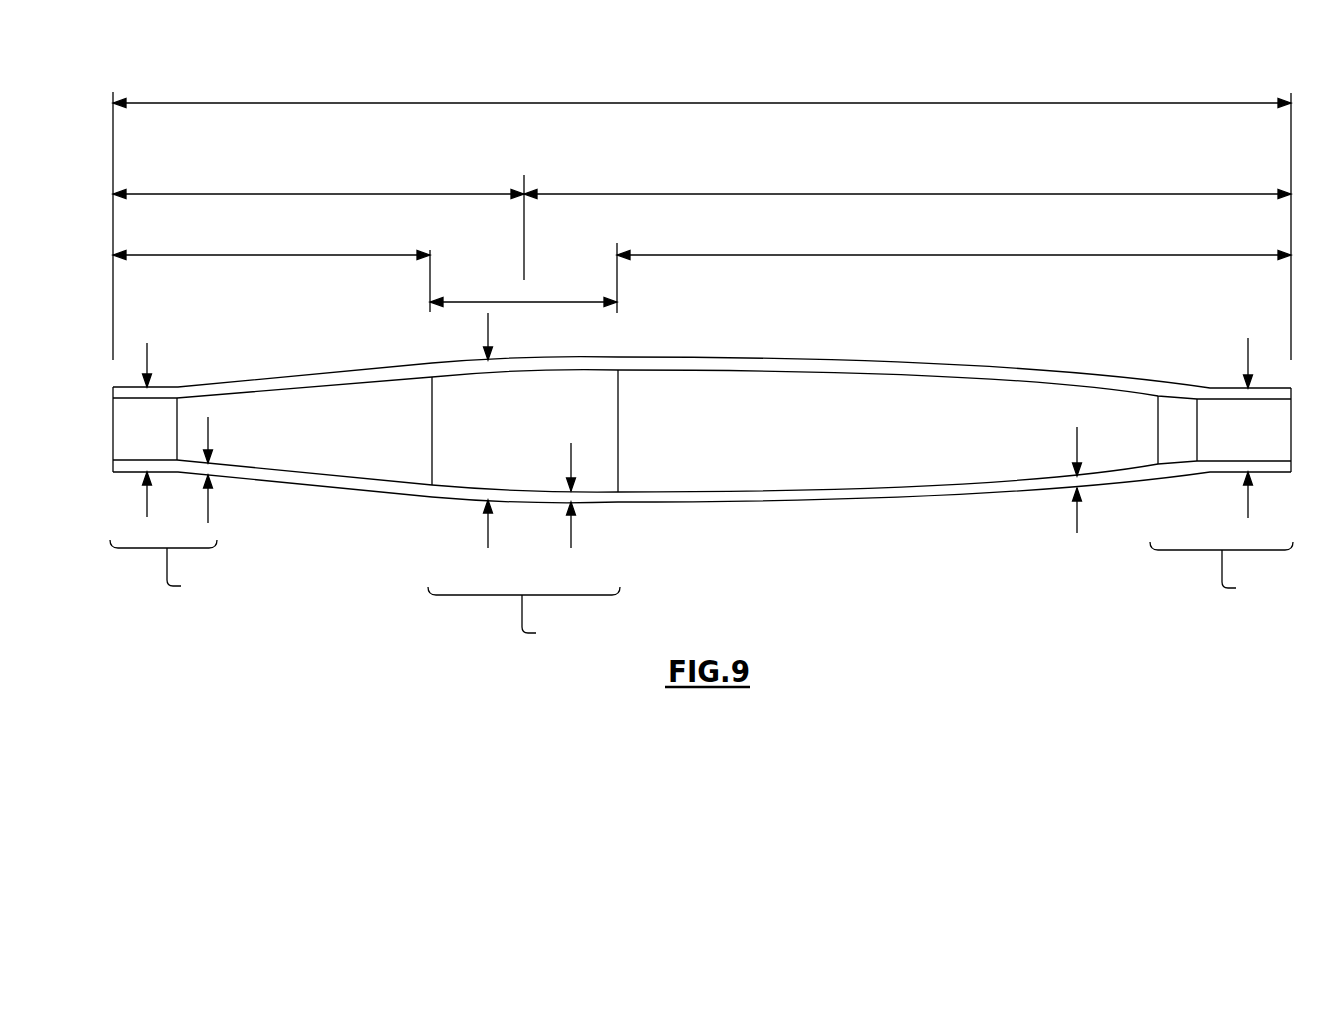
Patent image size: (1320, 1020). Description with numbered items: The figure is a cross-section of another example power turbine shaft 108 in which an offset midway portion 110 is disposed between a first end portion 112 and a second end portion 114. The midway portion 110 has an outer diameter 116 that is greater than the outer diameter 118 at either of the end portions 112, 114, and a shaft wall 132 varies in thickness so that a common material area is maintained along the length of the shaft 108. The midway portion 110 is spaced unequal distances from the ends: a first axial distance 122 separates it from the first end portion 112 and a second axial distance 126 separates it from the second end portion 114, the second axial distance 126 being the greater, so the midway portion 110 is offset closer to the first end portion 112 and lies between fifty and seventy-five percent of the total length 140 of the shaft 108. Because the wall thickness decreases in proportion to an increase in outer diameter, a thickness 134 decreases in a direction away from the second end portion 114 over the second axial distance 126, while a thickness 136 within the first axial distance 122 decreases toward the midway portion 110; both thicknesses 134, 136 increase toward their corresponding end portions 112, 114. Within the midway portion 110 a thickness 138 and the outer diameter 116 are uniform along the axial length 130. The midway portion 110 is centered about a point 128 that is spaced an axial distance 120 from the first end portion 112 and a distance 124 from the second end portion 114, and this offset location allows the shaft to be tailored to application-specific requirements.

The power turbine shaft 108 is at (294, 640).
The midway portion 110 is at (524, 511).
The first end portion 112 is at (166, 503).
The second end portion 114 is at (1221, 503).
The outer diameter 116 is at (488, 325).
The outer diameter 118 is at (147, 358).
The axial distance 120 is at (300, 194).
The first axial distance 122 is at (283, 255).
The distance 124 is at (853, 194).
The second axial distance 126 is at (912, 255).
The point 128 is at (524, 183).
The axial length 130 is at (547, 302).
The shaft wall 132 is at (777, 494).
The thickness 134 is at (1077, 520).
The thickness 136 is at (208, 510).
The thickness 138 is at (571, 455).
The total length 140 is at (570, 103).